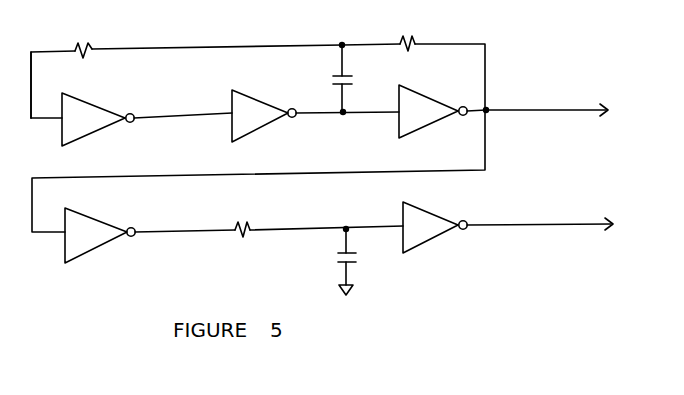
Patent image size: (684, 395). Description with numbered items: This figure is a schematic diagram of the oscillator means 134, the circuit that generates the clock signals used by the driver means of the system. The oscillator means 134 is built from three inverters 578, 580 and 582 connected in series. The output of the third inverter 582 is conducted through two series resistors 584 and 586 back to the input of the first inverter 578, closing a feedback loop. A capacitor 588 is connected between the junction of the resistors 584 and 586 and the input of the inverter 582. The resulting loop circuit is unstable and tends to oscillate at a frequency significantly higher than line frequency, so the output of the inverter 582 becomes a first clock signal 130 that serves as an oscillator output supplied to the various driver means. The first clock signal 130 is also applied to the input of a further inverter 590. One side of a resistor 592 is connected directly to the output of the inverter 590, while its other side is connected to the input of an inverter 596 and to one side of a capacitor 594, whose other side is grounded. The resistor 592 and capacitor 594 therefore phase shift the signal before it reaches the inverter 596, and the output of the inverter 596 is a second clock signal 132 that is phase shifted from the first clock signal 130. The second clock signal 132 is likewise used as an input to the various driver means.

The oscillator means 134 is at (201, 37).
The resistor 586 is at (90, 43).
The resistor 584 is at (424, 37).
The capacitor 588 is at (340, 73).
The inverter 578 is at (84, 141).
The inverter 580 is at (254, 131).
The inverter 582 is at (427, 130).
The first clock signal 130 is at (565, 112).
The inverter 590 is at (92, 250).
The resistor 592 is at (238, 232).
The capacitor 594 is at (343, 252).
The inverter 596 is at (435, 221).
The second clock signal 132 is at (558, 224).